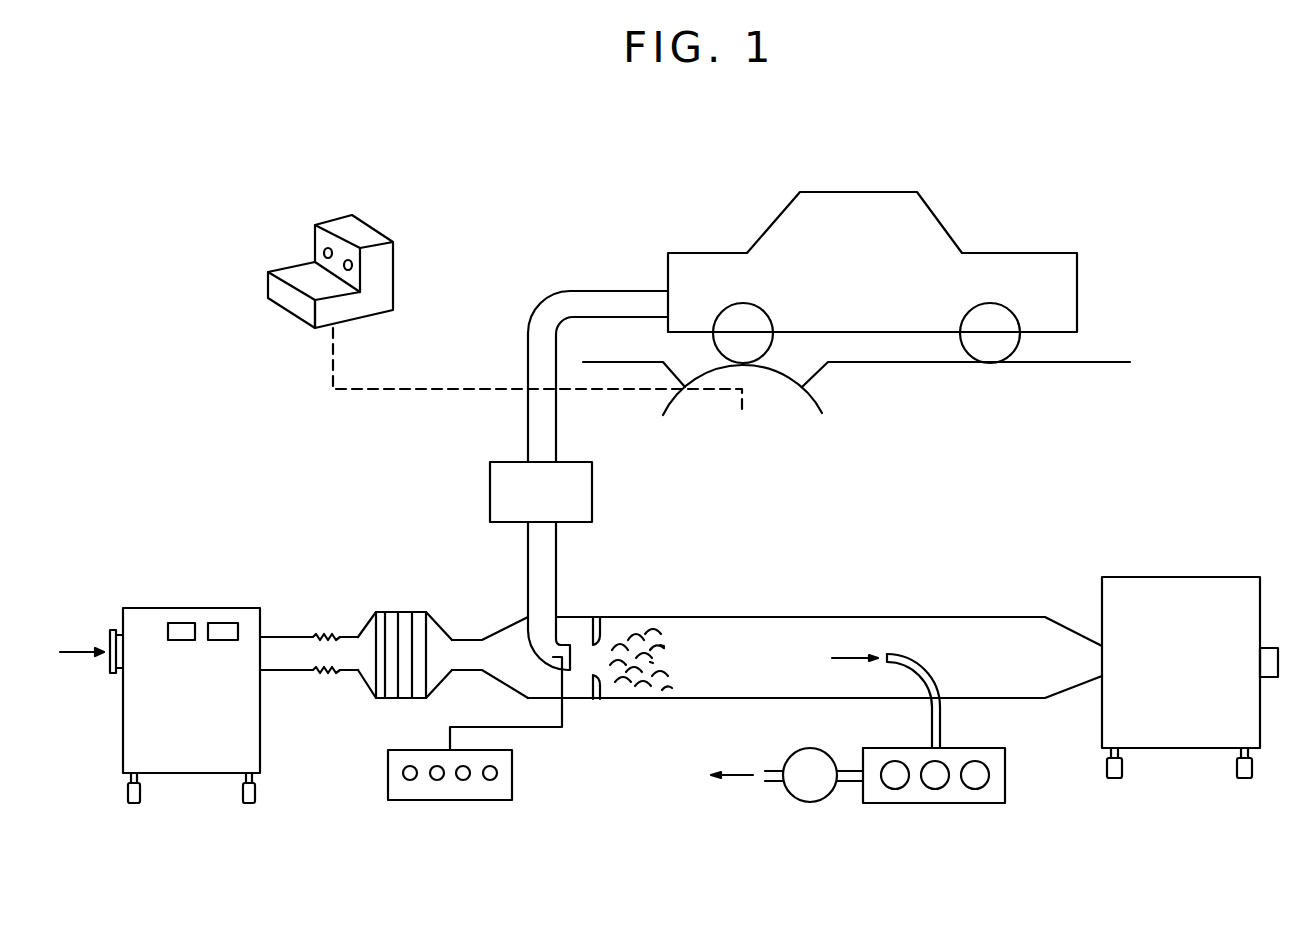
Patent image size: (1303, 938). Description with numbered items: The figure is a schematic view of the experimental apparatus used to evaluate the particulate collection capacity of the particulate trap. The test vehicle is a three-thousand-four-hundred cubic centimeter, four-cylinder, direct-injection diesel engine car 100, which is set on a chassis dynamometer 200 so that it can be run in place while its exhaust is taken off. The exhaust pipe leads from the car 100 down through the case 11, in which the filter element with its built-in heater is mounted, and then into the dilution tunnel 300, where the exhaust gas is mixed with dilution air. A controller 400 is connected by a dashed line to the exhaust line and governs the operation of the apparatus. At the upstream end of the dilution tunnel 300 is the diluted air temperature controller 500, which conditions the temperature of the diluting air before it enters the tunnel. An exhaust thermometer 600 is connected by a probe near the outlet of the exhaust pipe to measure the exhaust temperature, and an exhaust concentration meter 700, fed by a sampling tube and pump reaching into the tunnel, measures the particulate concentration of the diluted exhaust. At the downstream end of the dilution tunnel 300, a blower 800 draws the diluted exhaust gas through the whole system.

The case 11 is at (490, 497).
The diesel engine car 100 is at (877, 210).
The chassis dynamometer 200 is at (798, 400).
The dilution tunnel 300 is at (775, 633).
The controller 400 is at (346, 224).
The diluted air temperature controller 500 is at (190, 767).
The exhaust thermometer 600 is at (458, 790).
The exhaust concentration meter 700 is at (938, 798).
The blower 800 is at (1183, 577).